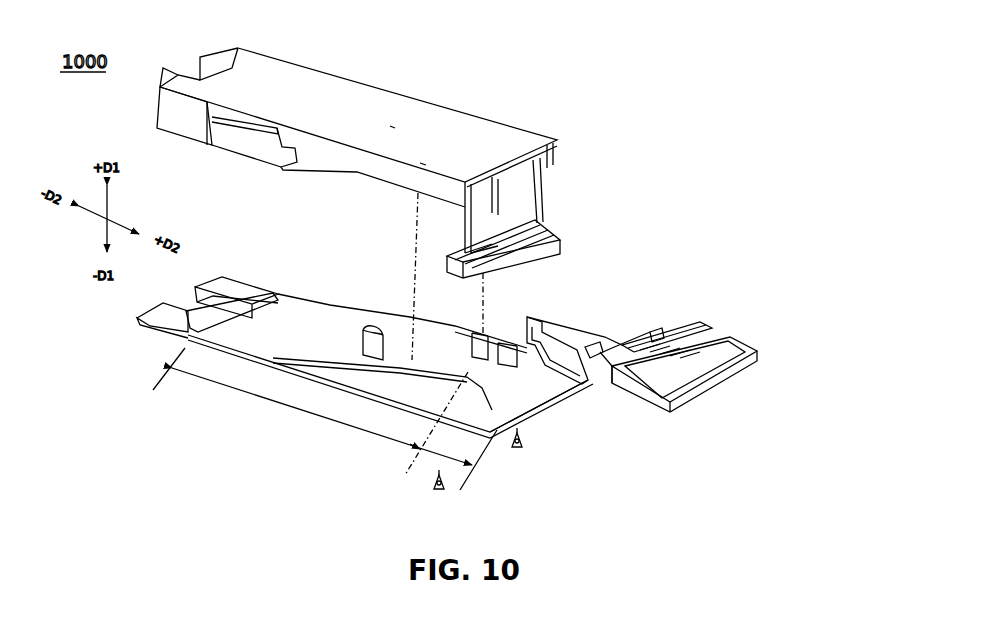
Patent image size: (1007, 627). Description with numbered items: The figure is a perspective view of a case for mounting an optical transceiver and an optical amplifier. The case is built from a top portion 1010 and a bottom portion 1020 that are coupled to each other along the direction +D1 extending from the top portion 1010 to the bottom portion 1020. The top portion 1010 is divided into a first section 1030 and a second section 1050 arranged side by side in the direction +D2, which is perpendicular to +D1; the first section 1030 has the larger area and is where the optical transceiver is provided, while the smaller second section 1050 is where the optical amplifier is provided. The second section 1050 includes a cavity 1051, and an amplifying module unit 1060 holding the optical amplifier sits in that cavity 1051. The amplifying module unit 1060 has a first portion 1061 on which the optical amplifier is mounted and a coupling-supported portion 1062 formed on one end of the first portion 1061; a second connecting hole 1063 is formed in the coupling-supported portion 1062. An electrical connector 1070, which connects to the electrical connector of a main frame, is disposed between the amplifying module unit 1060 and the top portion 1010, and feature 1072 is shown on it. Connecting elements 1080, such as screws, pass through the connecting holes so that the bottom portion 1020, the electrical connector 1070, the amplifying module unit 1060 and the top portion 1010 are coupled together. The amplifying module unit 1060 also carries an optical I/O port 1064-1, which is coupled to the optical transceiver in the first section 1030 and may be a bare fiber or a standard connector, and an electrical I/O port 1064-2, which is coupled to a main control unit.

The top portion 1010 is at (320, 292).
The bottom portion 1020 is at (398, 85).
The first section 1030 is at (205, 380).
The second section 1050 is at (445, 408).
The cavity 1051 is at (520, 374).
The amplifying module unit 1060 is at (753, 344).
The first portion 1061 is at (708, 357).
The coupling-supported portion 1062 is at (693, 329).
The second connecting hole 1063 is at (700, 325).
The optical input/output port 1064-1 is at (585, 345).
The electrical input/output port 1064-2 is at (652, 331).
The electrical connector 1070 is at (538, 230).
The frame 1072 is at (540, 226).
The connecting elements 1080 is at (515, 455).